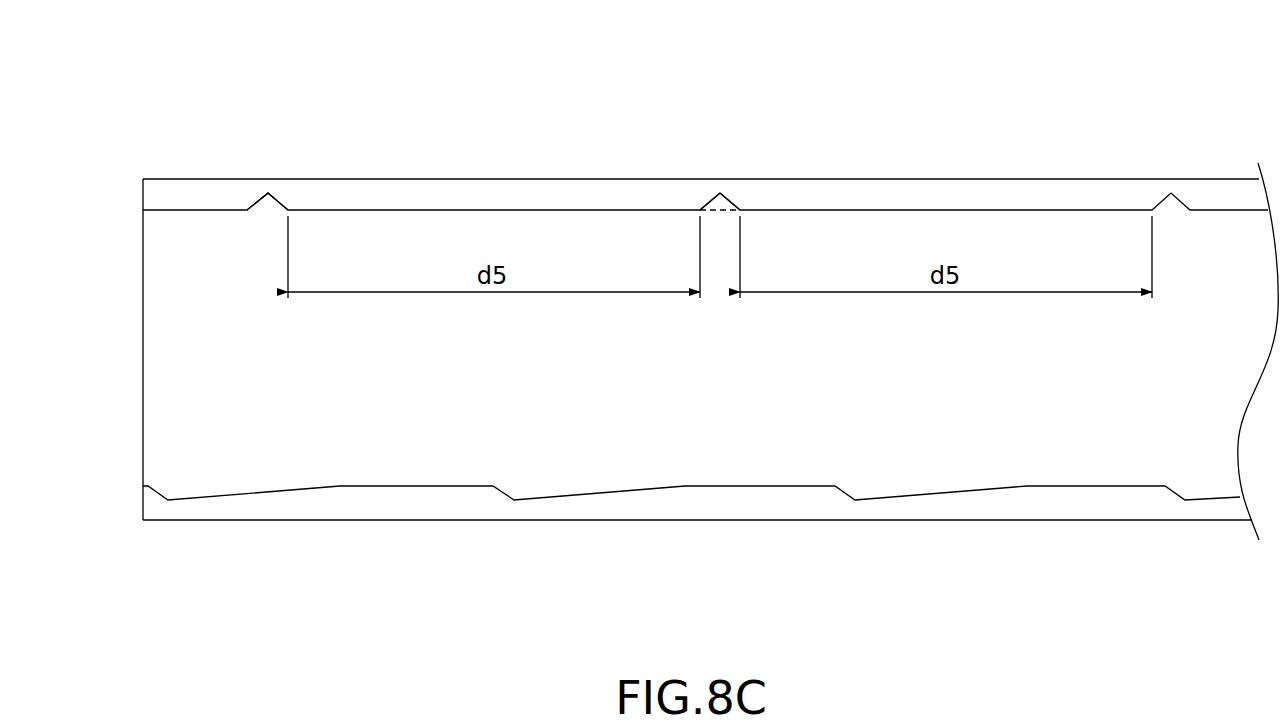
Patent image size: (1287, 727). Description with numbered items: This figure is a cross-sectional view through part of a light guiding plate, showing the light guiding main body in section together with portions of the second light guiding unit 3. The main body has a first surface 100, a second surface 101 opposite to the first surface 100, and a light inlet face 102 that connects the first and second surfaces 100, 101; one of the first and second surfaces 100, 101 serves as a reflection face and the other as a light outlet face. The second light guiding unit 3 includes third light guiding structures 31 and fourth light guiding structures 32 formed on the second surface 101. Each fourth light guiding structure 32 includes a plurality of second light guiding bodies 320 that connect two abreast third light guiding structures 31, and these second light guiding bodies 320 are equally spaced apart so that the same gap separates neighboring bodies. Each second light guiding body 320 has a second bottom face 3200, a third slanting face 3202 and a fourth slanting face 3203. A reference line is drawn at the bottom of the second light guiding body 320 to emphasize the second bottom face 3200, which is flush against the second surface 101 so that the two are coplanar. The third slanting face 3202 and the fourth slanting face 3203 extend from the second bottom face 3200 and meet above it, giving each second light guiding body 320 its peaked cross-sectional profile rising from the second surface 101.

The second light guiding unit 3 is at (390, 59).
The third light guiding structure 31 is at (402, 180).
The fourth light guiding structure 32 is at (291, 92).
The second light guiding body 320 is at (277, 191).
The second bottom face 3200 is at (720, 213).
The third slanting face 3202 is at (704, 208).
The fourth slanting face 3203 is at (737, 208).
The first surface 100 is at (425, 487).
The second surface 101 is at (521, 210).
The light inlet face 102 is at (142, 350).